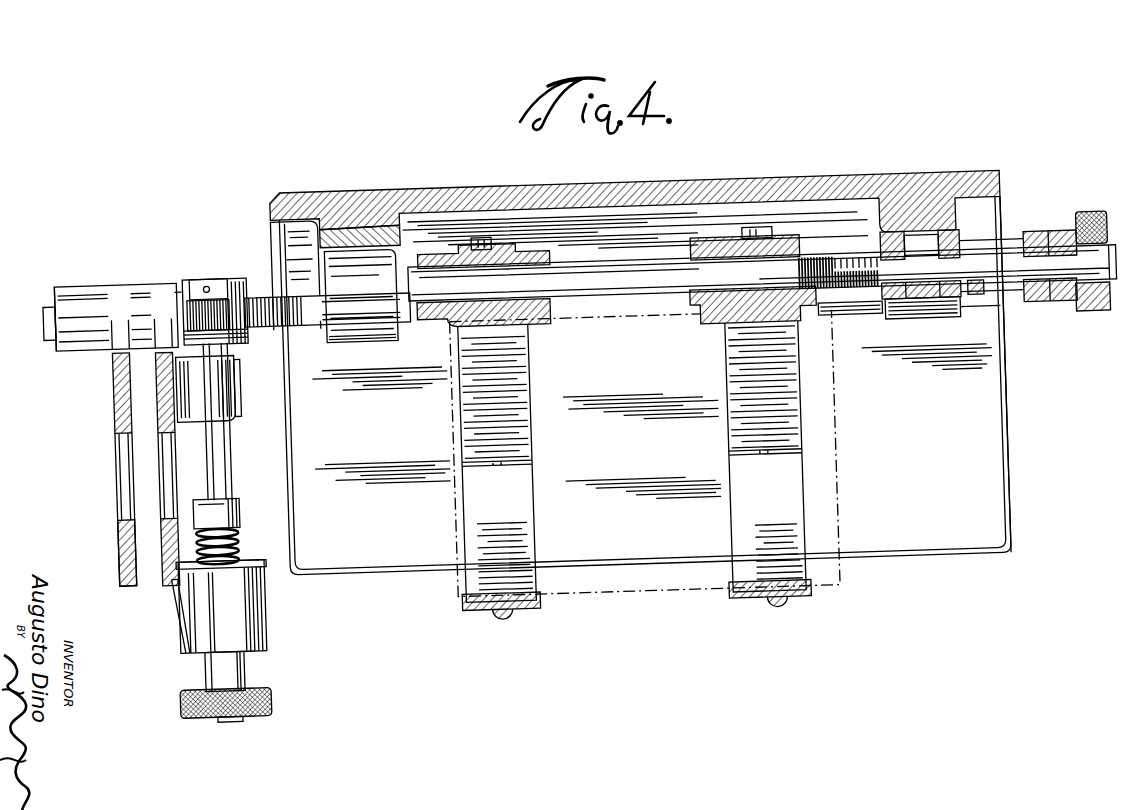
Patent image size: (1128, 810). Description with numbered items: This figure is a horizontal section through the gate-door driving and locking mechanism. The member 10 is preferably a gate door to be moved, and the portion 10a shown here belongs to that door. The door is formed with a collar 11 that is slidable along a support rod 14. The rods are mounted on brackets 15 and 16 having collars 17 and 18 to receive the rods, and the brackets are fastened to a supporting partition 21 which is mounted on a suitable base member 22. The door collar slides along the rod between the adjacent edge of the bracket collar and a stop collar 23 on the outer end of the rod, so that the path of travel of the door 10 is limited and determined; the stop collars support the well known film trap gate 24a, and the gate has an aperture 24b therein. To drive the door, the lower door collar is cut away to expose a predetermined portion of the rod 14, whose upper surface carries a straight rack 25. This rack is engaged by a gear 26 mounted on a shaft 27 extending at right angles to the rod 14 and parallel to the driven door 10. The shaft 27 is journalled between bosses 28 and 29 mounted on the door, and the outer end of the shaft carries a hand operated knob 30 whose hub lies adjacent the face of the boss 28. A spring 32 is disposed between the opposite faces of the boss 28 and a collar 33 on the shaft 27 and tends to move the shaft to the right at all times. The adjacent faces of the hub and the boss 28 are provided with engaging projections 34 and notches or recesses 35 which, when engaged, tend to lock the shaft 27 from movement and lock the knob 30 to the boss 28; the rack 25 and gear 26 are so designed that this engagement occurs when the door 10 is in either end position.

The member 10 is at (165, 578).
The post portion 10a is at (171, 505).
The collar 11 is at (146, 280).
The rod 14 is at (312, 303).
The bracket 15 is at (395, 242).
The bracket 16 is at (880, 222).
The collar 17 is at (372, 338).
The collar 18 is at (906, 317).
The supporting partition 21 is at (624, 184).
The base member 22 is at (641, 411).
The collar 23 is at (92, 272).
The film trap gate 24a is at (115, 403).
The aperture 24b is at (121, 483).
The straight rack 25 is at (262, 300).
The gear 26 is at (184, 282).
The shaft 27 is at (218, 452).
The boss 28 is at (245, 606).
The boss 29 is at (227, 394).
The knob 30 is at (273, 700).
The spring 32 is at (236, 552).
The collar 33 is at (240, 510).
The projection 34 is at (247, 663).
The notch 35 is at (210, 633).